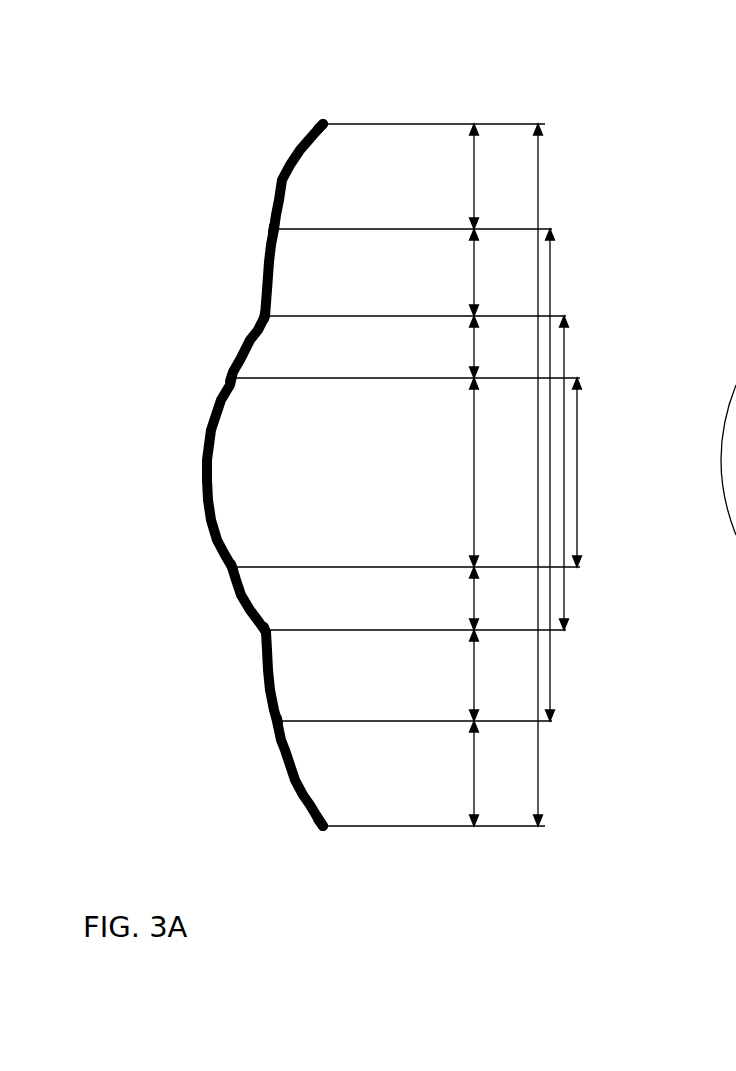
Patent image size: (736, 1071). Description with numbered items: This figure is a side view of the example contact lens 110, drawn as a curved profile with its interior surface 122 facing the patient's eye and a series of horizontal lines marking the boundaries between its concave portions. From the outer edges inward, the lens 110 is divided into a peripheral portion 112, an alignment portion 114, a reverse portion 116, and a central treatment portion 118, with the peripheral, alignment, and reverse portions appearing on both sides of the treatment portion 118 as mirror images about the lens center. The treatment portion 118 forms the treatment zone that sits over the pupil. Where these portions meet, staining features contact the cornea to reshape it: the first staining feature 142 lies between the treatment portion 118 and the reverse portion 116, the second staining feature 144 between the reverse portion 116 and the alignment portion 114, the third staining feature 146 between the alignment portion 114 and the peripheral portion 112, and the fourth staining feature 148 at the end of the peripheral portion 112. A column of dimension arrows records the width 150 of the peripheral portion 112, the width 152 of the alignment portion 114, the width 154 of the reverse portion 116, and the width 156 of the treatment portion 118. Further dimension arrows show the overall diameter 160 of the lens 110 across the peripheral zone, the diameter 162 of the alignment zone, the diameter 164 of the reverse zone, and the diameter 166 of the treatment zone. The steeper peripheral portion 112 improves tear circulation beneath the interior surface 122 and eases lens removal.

The contact lens 110 is at (82, 119).
The peripheral portion 112 is at (382, 193).
The alignment portion 114 is at (378, 288).
The reverse portion 116 is at (373, 366).
The treatment portion 118 is at (430, 492).
The interior surface 122 is at (224, 471).
The first staining feature 142 is at (221, 376).
The second staining feature 144 is at (251, 315).
The third staining feature 146 is at (261, 228).
The fourth staining feature 148 is at (305, 133).
The width of the peripheral portion 150 is at (475, 783).
The width of the alignment portion 152 is at (474, 683).
The width of the reverse portion 154 is at (474, 597).
The width of the treatment portion 156 is at (473, 515).
The diameter of the contact lens 160 is at (538, 165).
The diameter of the alignment zone 162 is at (550, 265).
The diameter of the reverse zone 164 is at (564, 343).
The diameter of the treatment zone 166 is at (577, 430).